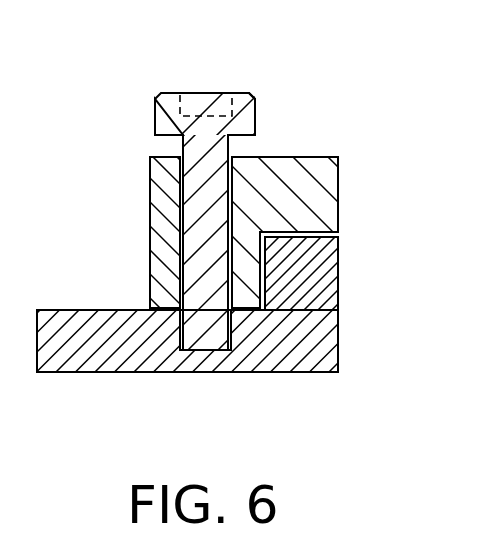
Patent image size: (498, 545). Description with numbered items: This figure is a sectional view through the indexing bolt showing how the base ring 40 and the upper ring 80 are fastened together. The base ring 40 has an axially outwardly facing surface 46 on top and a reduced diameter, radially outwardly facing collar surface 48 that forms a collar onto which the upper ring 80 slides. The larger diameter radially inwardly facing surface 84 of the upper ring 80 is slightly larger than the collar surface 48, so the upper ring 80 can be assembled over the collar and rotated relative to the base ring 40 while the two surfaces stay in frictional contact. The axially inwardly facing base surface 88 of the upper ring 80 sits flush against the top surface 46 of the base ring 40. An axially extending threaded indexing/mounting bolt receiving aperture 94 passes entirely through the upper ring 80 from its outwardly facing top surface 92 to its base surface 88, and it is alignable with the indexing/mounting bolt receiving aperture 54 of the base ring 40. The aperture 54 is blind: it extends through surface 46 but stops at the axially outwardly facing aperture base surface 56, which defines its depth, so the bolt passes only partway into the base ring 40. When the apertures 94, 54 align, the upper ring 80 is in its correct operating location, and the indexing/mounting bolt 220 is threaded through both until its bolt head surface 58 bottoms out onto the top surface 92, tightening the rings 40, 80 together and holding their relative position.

The indexing/mounting bolt 220 is at (210, 92).
The bolt head surface 58 is at (158, 140).
The axially outwardly facing top surface 92 is at (278, 156).
The upper ring 80 is at (303, 175).
The indexing/mounting bolt receiving aperture 94 is at (181, 234).
The larger diameter radially inwardly facing surface 84 is at (255, 270).
The collar surface 48 is at (268, 293).
The base ring 40 is at (330, 330).
The axially outwardly facing surface 46 is at (78, 310).
The axially inwardly facing base surface 88 is at (155, 313).
The indexing/mounting bolt receiving aperture 54 is at (178, 337).
The aperture base surface 56 is at (205, 351).